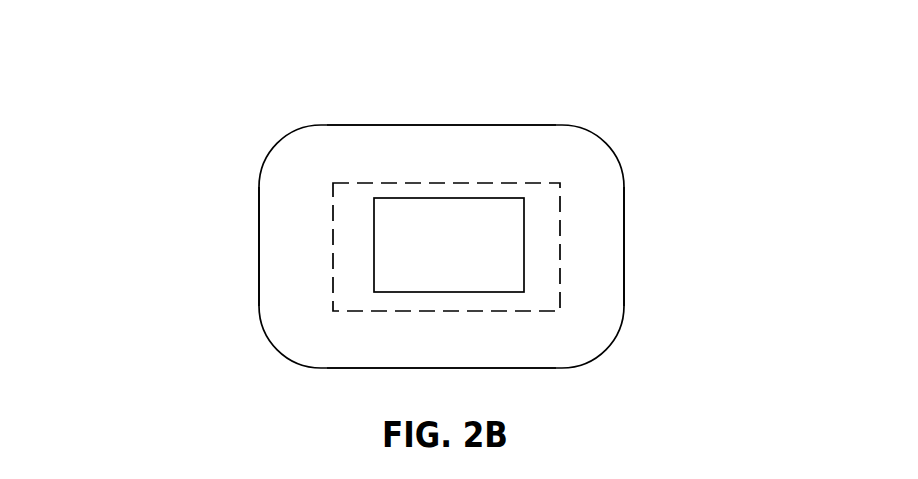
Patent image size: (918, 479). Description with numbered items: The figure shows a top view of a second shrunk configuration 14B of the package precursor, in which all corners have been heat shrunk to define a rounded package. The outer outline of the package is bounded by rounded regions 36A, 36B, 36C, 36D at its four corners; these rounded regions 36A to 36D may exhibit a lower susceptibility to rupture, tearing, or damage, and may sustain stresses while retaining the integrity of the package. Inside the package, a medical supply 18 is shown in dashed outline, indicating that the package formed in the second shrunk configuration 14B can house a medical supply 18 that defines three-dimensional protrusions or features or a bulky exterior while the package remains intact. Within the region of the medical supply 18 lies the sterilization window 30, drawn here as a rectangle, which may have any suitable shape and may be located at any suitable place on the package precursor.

The second shrunk configuration 14B is at (163, 56).
The rounded region 36A is at (597, 137).
The rounded region 36B is at (614, 338).
The rounded region 36C is at (275, 350).
The rounded region 36D is at (276, 146).
The medical supply 18 is at (331, 210).
The sterilization window 30 is at (485, 245).